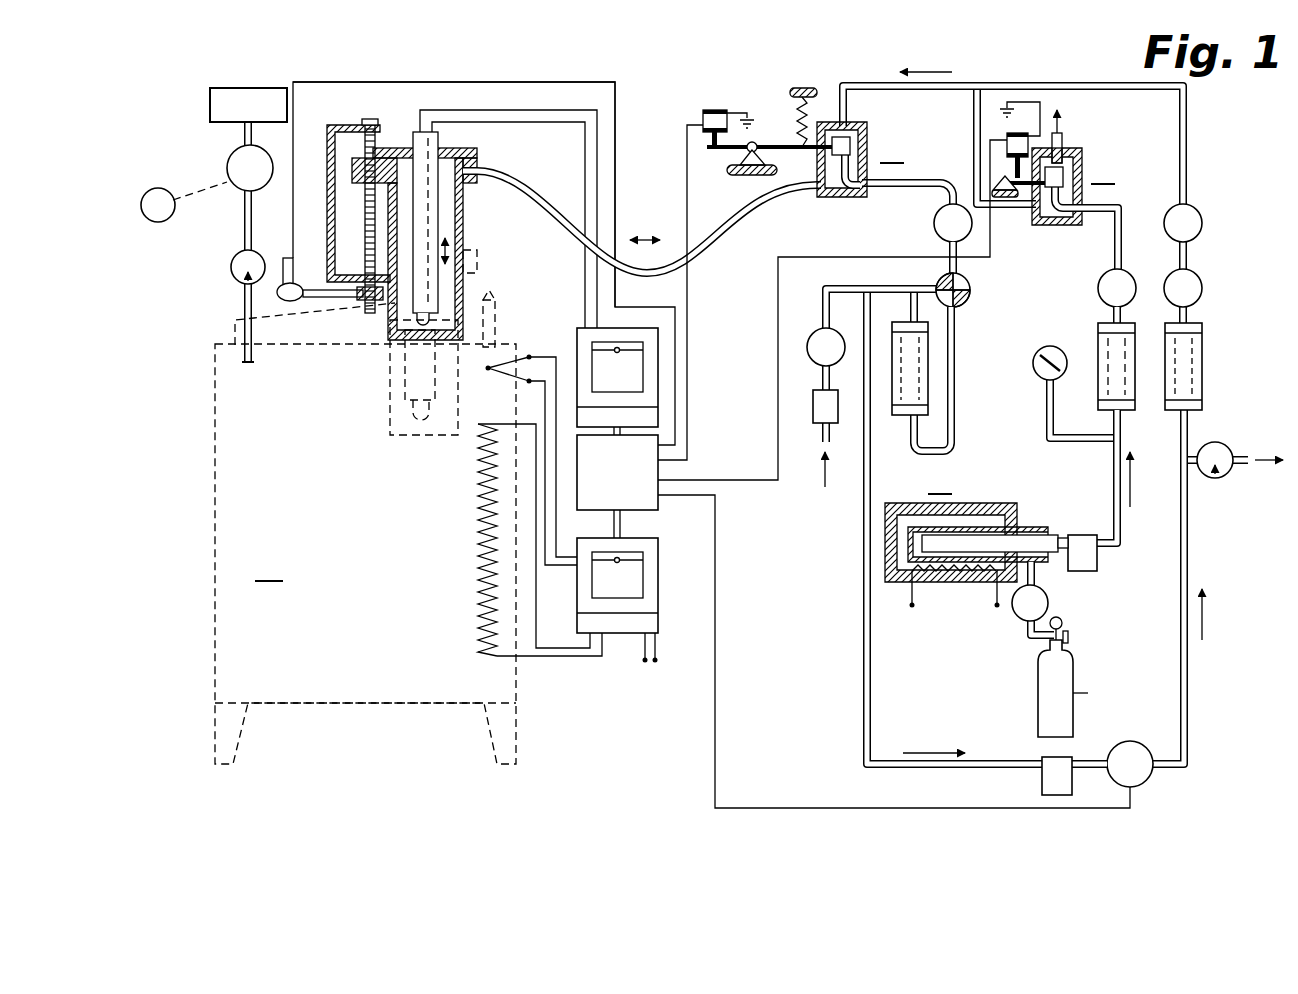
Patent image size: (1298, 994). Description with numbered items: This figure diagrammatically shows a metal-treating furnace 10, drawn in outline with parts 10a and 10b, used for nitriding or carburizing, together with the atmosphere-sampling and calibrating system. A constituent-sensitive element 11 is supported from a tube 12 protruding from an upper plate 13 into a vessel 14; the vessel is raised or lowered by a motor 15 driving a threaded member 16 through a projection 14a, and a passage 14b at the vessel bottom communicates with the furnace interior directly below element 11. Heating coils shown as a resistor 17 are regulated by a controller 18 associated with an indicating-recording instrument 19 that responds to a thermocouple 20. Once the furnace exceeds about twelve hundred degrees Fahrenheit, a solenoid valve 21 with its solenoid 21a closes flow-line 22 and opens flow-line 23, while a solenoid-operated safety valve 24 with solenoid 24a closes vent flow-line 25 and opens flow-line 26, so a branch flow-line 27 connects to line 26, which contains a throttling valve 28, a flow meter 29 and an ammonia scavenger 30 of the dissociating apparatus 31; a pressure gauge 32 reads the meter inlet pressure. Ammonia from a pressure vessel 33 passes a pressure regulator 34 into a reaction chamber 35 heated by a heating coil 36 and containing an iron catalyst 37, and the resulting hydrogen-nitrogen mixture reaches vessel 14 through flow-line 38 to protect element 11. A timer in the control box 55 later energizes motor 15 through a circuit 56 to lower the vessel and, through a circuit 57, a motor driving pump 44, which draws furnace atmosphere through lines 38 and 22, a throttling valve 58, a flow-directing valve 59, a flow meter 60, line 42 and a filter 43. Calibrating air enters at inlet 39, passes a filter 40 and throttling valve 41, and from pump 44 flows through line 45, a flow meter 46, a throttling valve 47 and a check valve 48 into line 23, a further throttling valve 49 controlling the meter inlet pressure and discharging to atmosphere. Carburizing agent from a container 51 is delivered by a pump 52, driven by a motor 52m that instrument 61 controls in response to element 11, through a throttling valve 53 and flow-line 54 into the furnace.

The metal-treating furnace 10 is at (365, 554).
The housing top wall 10a is at (233, 323).
The guide 10b is at (492, 300).
The constituent-sensitive element 11 is at (418, 323).
The tube 12 is at (438, 197).
The upper plate 13 is at (477, 155).
The vessel 14 is at (463, 228).
The projection 14a is at (360, 160).
The passage 14b is at (423, 350).
The motor 15 is at (290, 302).
The threaded member 16 is at (367, 221).
The resistor 17 is at (477, 562).
The controller 18 is at (655, 622).
The indicating-recording instrument 19 is at (650, 565).
The thermocouple 20 is at (492, 365).
The solenoid valve 21 is at (829, 142).
The solenoid 21a is at (723, 108).
The flow-line 22 is at (902, 181).
The flow-line 23 is at (870, 82).
The solenoid-operated safety valve 24 is at (1068, 181).
The solenoid 24a is at (1015, 133).
The flow-line 25 is at (1063, 141).
The flow-line 26 is at (1112, 238).
The branch flow-line 27 is at (973, 152).
The throttling valve 28 is at (1098, 283).
The flow meter 29 is at (1098, 344).
The ammonia scavenger or absorber 30 is at (1080, 533).
The ammonia dissociating apparatus 31 is at (951, 525).
The pressure gauge 32 is at (1042, 349).
The pressure vessel 33 is at (1038, 677).
The pressure regulator 34 is at (1017, 624).
The reaction chamber 35 is at (1025, 527).
The heating coil 36 is at (930, 572).
The ammonia dissociating catalyst 37 is at (968, 540).
The flow-line 38 is at (712, 238).
The air inlet 39 is at (822, 431).
The filter 40 is at (813, 397).
The throttling valve 41 is at (812, 331).
The branch-line 42 is at (868, 330).
The second filter 43 is at (1042, 758).
The pump 44 is at (1127, 746).
The line 45 is at (1188, 548).
The flow meter 46 is at (1202, 378).
The throttling valve 47 is at (1203, 288).
The check valve 48 is at (1203, 228).
The throttling valve 49 is at (1227, 450).
The container 51 is at (220, 101).
The pump 52 is at (227, 160).
The motor 52m is at (162, 222).
The throttling valve 53 is at (233, 262).
The flow-line 54 is at (250, 360).
The control box 55 is at (653, 497).
The circuit 56 is at (617, 108).
The energizing circuit 57 is at (717, 598).
The throttling valve 58 is at (937, 227).
The flow-directing valve 59 is at (970, 283).
The flow meter 60 is at (928, 377).
The instrument 61 is at (660, 362).